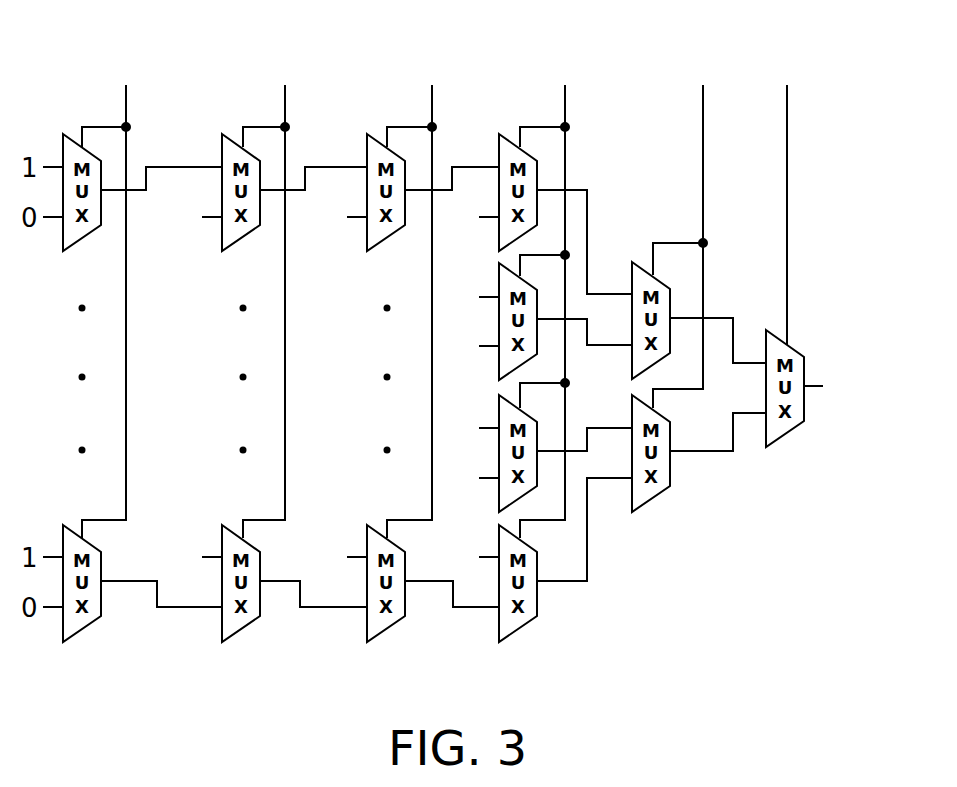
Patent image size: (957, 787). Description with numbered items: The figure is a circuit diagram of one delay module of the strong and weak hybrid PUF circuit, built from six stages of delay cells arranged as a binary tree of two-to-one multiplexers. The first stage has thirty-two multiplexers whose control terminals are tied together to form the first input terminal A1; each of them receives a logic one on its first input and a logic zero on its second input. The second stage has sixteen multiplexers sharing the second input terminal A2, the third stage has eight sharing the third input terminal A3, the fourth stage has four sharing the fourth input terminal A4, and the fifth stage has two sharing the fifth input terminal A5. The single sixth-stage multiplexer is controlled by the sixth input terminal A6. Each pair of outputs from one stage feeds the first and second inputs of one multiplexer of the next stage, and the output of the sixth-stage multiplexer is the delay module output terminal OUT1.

The first input terminal of the delay module A1 is at (126, 274).
The second input terminal of the delay module A2 is at (285, 274).
The third input terminal of the delay module A3 is at (432, 274).
The fourth input terminal of the delay module A4 is at (565, 274).
The fifth input terminal of the delay module A5 is at (685, 218).
The sixth input terminal of the delay module A6 is at (786, 186).
The output terminal of the delay module OUT1 is at (858, 385).